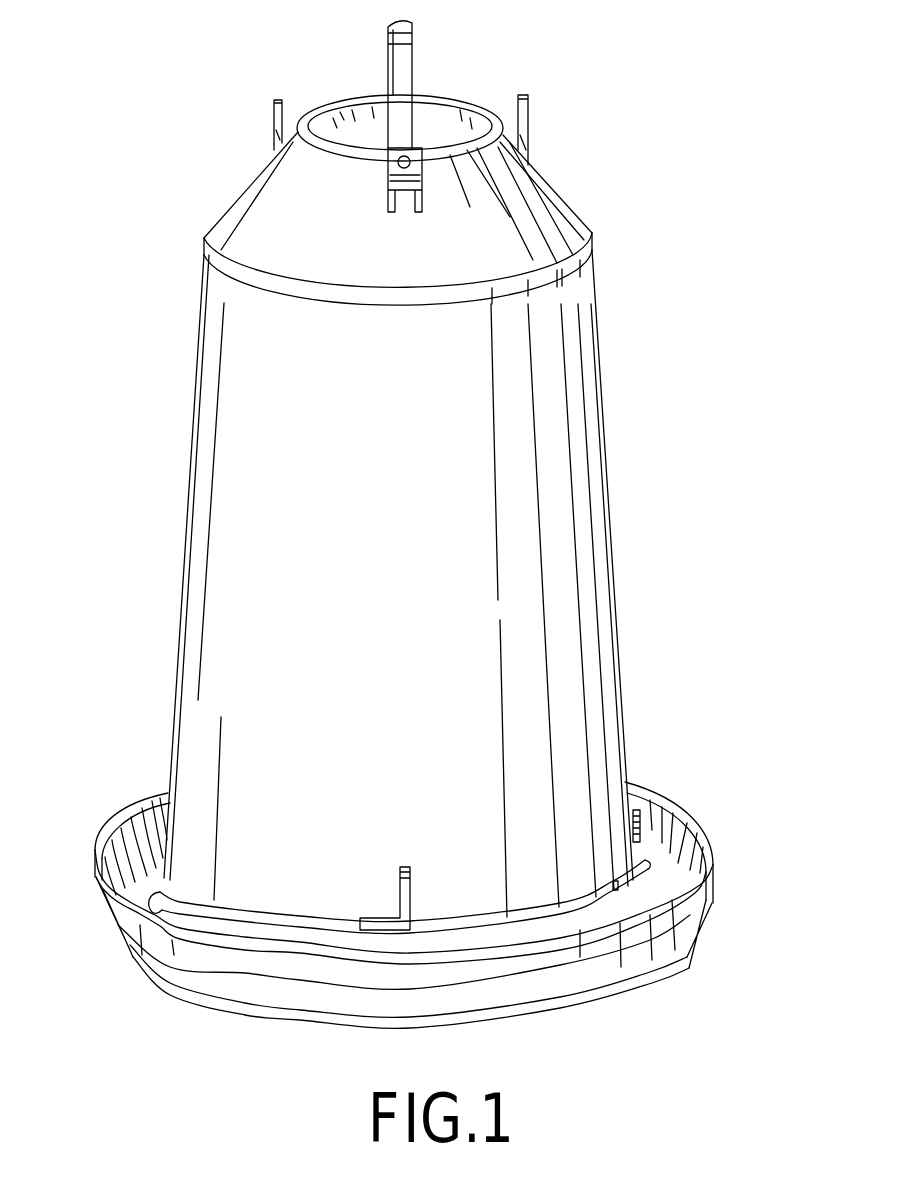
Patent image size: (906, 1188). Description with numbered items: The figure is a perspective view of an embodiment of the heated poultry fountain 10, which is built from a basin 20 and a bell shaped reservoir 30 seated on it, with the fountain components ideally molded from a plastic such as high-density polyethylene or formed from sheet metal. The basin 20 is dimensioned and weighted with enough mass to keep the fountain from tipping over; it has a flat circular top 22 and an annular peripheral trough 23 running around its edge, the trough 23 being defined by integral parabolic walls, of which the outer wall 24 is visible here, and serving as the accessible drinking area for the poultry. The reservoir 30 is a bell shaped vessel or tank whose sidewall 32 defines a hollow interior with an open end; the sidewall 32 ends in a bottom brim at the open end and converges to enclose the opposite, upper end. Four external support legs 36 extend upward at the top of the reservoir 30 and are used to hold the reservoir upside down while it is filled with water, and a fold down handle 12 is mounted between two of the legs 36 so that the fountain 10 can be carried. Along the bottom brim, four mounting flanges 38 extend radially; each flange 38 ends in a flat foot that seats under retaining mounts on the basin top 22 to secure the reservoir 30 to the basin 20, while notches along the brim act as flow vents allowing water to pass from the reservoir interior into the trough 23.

The heated poultry fountain 10 is at (612, 141).
The fold down handle 12 is at (403, 58).
The basin 20 is at (728, 868).
The flat circular top 22 is at (242, 918).
The annular peripheral trough 23 is at (110, 853).
The outer wall 24 is at (103, 923).
The bell shaped reservoir 30 is at (625, 508).
The reservoir sidewall 32 is at (222, 538).
The external support legs 36 is at (272, 118).
The mounting flanges 38 is at (418, 880).